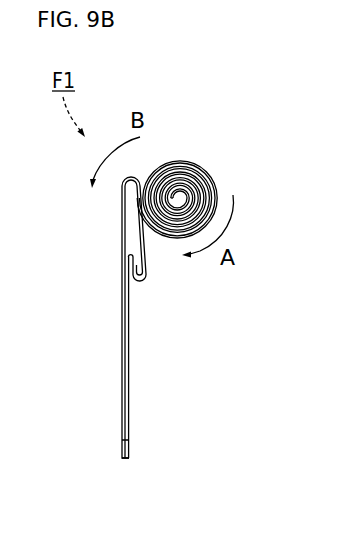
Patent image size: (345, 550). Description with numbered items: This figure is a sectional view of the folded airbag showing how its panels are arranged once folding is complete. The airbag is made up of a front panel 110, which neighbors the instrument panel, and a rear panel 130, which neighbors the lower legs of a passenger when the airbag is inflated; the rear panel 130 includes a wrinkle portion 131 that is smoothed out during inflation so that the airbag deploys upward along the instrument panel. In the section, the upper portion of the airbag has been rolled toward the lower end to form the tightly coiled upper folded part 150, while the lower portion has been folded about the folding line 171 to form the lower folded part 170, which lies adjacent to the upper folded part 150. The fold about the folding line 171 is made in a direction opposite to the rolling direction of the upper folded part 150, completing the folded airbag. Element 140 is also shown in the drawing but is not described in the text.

The front panel 110 is at (122, 375).
The rear panel 130 is at (129, 358).
The wrinkle portion 131 is at (146, 279).
The end portion 140 is at (126, 460).
The upper folded part 150 is at (215, 168).
The lower folded part 170 is at (110, 293).
The folding line 171 is at (133, 177).